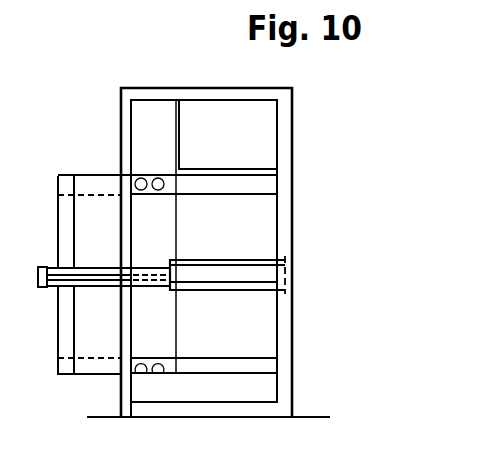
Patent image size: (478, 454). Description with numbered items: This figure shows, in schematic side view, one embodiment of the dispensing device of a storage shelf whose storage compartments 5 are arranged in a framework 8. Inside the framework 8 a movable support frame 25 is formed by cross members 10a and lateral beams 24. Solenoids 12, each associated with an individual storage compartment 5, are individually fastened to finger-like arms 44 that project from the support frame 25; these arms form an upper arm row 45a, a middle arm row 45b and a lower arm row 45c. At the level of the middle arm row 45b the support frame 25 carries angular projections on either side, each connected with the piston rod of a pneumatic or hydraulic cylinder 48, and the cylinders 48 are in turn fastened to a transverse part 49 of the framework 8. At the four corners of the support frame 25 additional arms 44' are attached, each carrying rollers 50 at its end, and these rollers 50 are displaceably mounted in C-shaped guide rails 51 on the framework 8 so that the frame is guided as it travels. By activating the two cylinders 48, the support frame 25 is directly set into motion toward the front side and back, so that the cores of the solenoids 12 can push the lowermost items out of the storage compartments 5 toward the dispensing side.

The storage compartment 5 is at (258, 143).
The framework 8 is at (292, 110).
The cross member 10a is at (68, 181).
The solenoid 12 is at (176, 100).
The lateral beam 24 is at (67, 323).
The support frame 25 is at (57, 241).
The arm 44 is at (161, 146).
The additional arm 44' is at (89, 276).
The upper arm row 45a is at (113, 173).
The middle arm row 45b is at (100, 266).
The lower arm row 45c is at (100, 359).
The pneumatic or hydraulic cylinder 48 is at (252, 260).
The transverse part 49 is at (243, 273).
The roller 50 is at (158, 178).
The C-shaped guide rail 51 is at (204, 180).